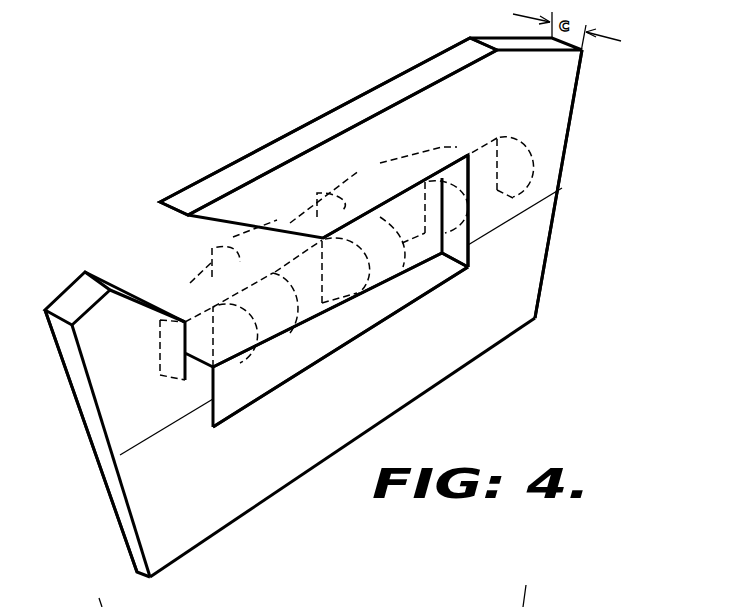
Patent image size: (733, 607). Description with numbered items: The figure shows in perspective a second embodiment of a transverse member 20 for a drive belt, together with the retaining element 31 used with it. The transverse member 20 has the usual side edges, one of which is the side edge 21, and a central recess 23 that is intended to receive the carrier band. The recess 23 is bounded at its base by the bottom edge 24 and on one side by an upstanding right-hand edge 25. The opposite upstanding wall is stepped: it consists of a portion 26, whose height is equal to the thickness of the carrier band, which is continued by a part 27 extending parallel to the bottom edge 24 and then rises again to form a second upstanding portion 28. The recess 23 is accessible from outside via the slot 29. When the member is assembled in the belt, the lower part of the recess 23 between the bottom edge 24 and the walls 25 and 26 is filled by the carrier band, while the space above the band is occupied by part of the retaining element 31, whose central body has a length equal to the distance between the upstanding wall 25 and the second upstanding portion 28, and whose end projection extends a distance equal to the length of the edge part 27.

The transverse member 20 is at (569, 222).
The side edge 21 is at (574, 122).
The central recess 23 is at (338, 318).
The bottom edge 24 is at (413, 288).
The upstanding right-hand edge 25 is at (471, 253).
The upstanding wall portion 26 is at (205, 410).
The edge part 27 is at (193, 378).
The second upstanding portion 28 is at (173, 347).
The slot 29 is at (150, 238).
The retaining element 31 is at (312, 596).